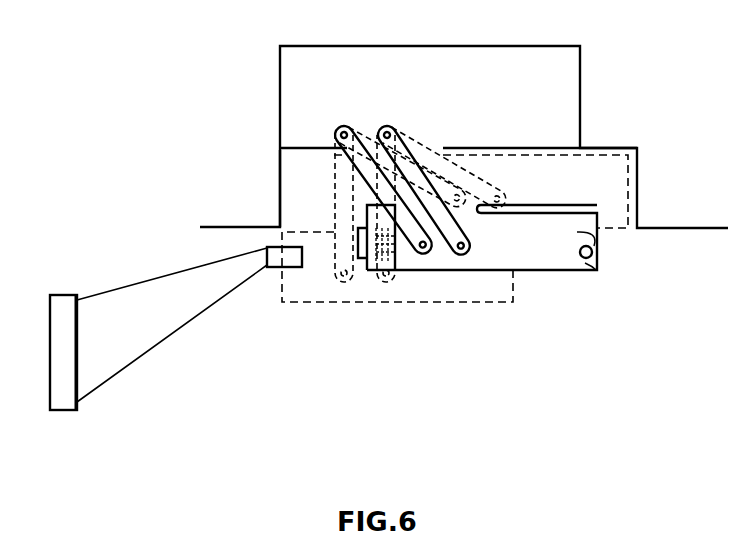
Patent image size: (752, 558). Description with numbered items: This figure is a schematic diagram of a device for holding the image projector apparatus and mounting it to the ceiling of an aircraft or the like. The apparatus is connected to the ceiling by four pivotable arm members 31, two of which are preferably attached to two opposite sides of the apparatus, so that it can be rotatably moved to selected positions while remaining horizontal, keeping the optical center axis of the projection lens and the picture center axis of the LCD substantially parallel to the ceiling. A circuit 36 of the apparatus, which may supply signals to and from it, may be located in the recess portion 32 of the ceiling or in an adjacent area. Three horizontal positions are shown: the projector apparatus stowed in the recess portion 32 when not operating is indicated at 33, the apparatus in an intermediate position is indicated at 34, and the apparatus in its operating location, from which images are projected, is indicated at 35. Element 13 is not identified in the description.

The photosensor 13 is at (63, 411).
The pivotable arm members 31 is at (415, 150).
The recess portion 32 is at (281, 181).
The projector apparatus in recess portion 33 is at (603, 156).
The projector apparatus in intermediate position 34 is at (600, 265).
The projector apparatus in operating location 35 is at (515, 278).
The circuit 36 is at (318, 100).